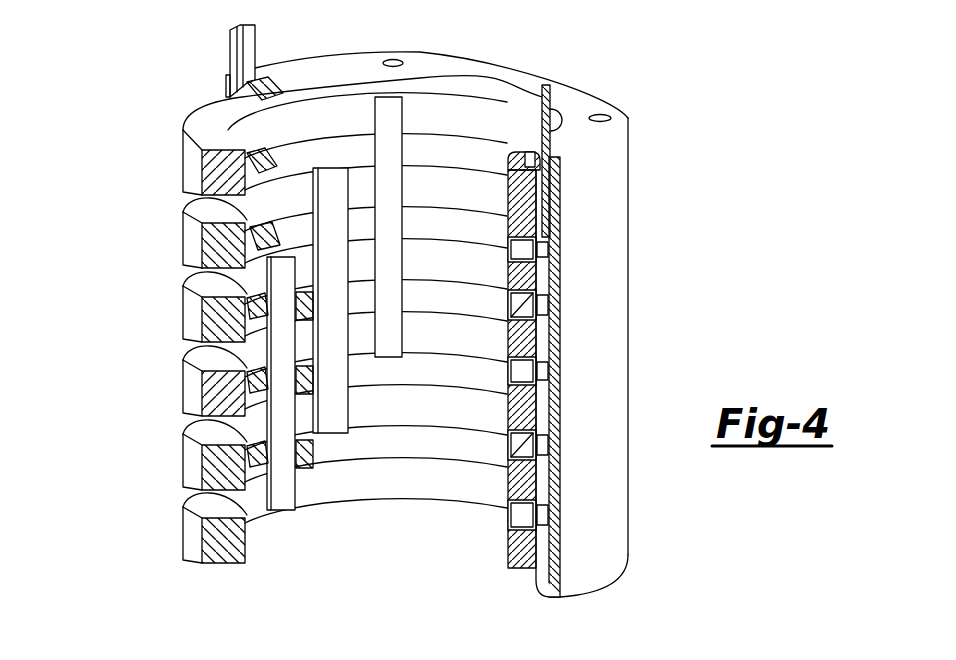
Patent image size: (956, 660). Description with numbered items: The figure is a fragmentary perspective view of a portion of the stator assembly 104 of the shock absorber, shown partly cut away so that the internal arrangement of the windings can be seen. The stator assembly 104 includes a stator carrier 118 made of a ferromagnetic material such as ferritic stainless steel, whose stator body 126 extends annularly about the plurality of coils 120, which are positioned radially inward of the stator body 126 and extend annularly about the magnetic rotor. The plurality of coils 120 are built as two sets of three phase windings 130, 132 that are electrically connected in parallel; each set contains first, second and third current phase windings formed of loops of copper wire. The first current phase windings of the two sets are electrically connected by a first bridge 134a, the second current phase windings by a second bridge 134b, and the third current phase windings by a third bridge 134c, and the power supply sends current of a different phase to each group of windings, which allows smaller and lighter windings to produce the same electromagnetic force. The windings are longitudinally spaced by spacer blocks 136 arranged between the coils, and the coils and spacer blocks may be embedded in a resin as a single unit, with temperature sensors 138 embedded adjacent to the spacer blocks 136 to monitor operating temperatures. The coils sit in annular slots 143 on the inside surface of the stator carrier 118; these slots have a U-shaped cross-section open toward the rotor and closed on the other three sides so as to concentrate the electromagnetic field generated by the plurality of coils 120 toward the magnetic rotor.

The stator assembly 104 is at (100, 148).
The stator carrier 118 is at (640, 192).
The plurality of coils 120 is at (520, 210).
The stator body 126 is at (610, 212).
The first set of three phase windings 130 is at (152, 128).
The second set of three phase windings 132 is at (152, 373).
The first bridge 134a is at (392, 350).
The second bridge 134b is at (333, 423).
The third bridge 134c is at (283, 497).
The spacer blocks 136 is at (433, 297).
The temperature sensors 138 is at (560, 397).
The annular slots 143 is at (285, 222).